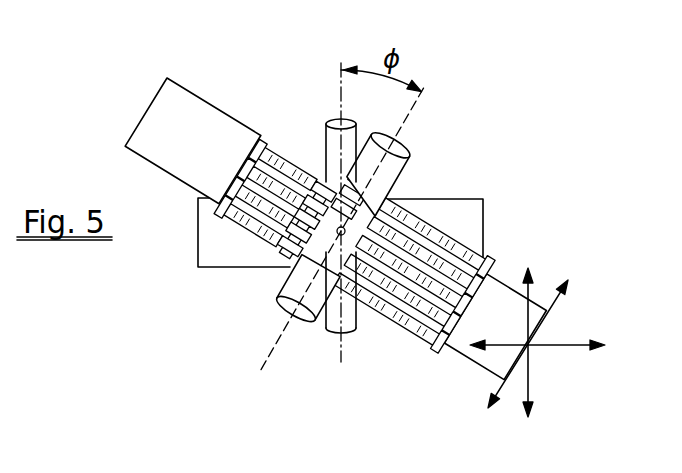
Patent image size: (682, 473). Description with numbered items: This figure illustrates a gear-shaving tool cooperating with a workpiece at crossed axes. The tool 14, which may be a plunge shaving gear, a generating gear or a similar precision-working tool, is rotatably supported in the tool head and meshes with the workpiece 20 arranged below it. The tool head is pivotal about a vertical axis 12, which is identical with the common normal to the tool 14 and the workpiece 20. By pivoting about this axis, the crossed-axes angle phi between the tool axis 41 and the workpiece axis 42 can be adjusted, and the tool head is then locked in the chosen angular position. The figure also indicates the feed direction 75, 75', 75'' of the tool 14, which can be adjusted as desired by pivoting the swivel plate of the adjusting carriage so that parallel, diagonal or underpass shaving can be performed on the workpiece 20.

The tool 14 is at (183, 117).
The workpiece 20 is at (222, 248).
The vertical axis (common normal) 12 is at (402, 178).
The tool axis 41 is at (410, 122).
The workpiece axis 42 is at (338, 107).
The feed direction 75 is at (528, 317).
The feed direction 75' is at (536, 312).
The feed direction 75'' is at (549, 283).